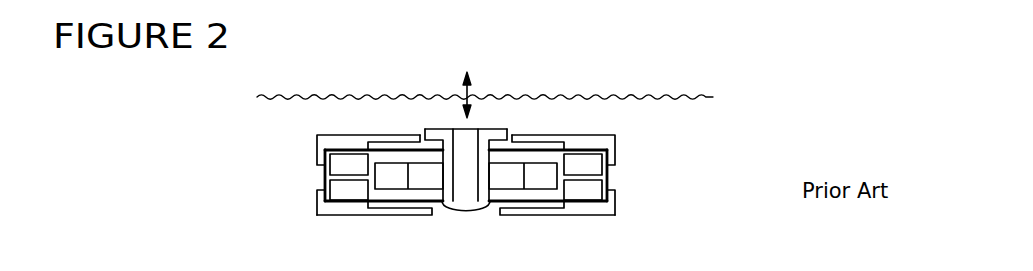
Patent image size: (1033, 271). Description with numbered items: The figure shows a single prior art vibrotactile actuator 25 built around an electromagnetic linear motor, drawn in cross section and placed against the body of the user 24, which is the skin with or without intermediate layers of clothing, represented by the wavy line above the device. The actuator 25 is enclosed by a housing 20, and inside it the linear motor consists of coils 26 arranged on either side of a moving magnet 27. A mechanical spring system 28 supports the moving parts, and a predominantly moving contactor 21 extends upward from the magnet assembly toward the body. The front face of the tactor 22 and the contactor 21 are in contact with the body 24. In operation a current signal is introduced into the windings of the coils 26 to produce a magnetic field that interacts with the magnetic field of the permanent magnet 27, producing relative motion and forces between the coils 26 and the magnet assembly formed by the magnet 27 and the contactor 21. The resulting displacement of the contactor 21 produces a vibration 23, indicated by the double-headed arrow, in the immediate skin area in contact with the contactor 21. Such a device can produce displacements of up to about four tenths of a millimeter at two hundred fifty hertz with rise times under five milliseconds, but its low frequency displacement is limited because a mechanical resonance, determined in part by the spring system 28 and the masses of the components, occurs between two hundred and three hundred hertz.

The housing 20 is at (632, 158).
The contactor 21 is at (505, 127).
The front face of the tactor 22 is at (600, 135).
The vibration 23 is at (487, 78).
The body of the user 24 is at (353, 96).
The vibrotactile actuator 25 is at (170, 126).
The coils 26 is at (350, 164).
The moving magnet 27 is at (385, 180).
The mechanical spring system 28 is at (507, 204).